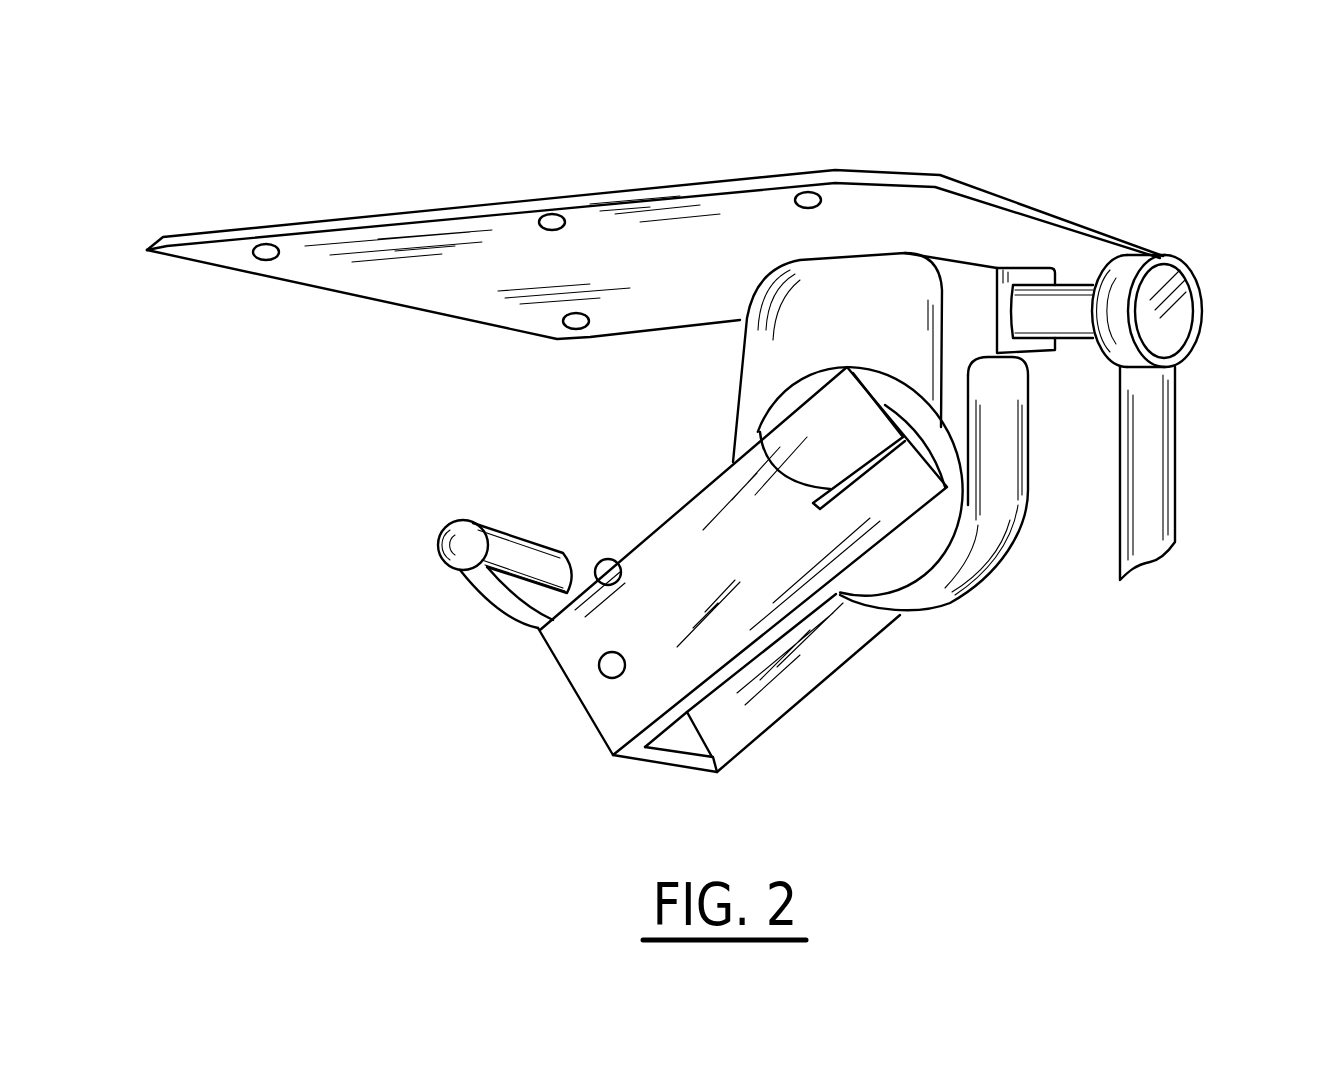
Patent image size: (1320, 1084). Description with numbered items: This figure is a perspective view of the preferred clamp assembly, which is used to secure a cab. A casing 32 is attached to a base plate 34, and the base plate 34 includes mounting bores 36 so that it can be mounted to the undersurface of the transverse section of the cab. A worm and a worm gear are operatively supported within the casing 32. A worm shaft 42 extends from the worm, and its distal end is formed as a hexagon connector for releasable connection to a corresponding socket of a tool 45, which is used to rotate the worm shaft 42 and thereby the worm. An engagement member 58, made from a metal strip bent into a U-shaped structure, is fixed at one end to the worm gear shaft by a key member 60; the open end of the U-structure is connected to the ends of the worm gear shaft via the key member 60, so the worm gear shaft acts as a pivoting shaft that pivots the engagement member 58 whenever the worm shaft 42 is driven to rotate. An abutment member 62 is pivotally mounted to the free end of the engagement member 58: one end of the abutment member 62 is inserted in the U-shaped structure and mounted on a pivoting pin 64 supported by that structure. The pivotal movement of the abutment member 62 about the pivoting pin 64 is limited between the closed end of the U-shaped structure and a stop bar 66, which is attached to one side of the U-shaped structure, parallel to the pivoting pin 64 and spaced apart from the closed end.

The casing 32 is at (1000, 503).
The base plate 34 is at (690, 183).
The mounting bores 36 is at (551, 214).
The worm shaft 42 is at (1067, 343).
The tool 45 is at (1175, 412).
The engagement member 58 is at (817, 673).
The key member 60 is at (733, 470).
The abutment member 62 is at (480, 522).
The pivoting pin 64 is at (599, 665).
The stop bar 66 is at (605, 560).